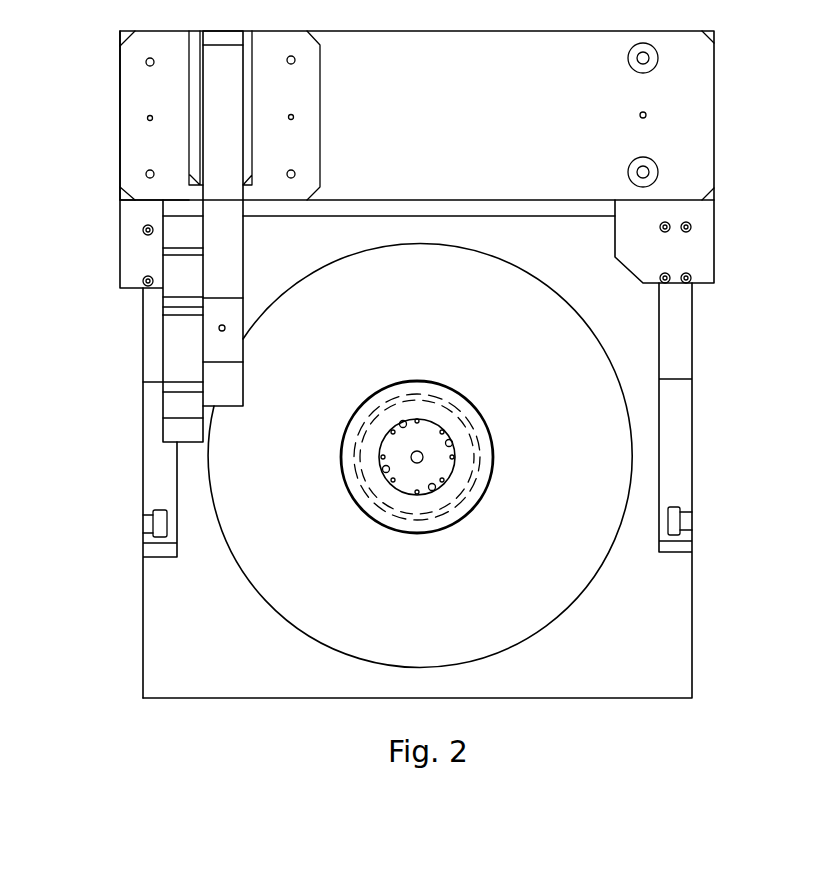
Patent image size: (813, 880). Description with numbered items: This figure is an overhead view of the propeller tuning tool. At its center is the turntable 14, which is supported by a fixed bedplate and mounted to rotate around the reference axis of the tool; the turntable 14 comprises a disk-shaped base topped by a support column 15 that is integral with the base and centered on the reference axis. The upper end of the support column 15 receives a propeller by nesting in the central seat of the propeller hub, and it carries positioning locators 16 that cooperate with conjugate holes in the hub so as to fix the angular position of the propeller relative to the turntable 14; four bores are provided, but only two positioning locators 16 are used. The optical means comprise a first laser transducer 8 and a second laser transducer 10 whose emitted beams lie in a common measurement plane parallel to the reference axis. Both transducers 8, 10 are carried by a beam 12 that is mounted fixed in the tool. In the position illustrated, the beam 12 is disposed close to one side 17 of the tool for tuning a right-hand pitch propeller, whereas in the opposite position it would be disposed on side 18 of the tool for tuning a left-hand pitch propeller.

The first laser transducer 8 is at (177, 350).
The second laser transducer 10 is at (178, 225).
The beam 12 is at (220, 67).
The turntable 14 is at (548, 603).
The support column 15 is at (458, 470).
The positioning locators 16 is at (404, 421).
The side of the tool 17 is at (120, 127).
The side of the tool 18 is at (714, 102).